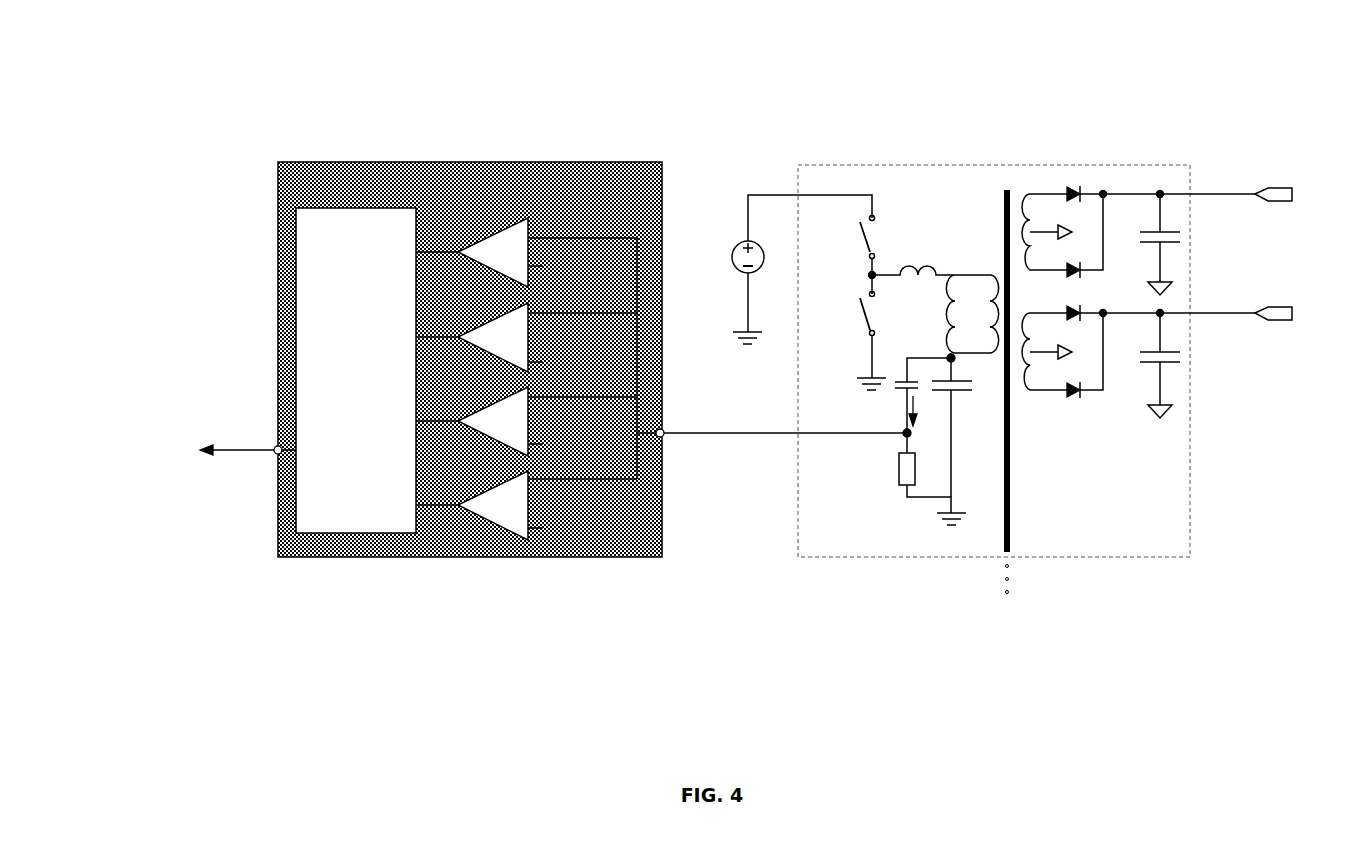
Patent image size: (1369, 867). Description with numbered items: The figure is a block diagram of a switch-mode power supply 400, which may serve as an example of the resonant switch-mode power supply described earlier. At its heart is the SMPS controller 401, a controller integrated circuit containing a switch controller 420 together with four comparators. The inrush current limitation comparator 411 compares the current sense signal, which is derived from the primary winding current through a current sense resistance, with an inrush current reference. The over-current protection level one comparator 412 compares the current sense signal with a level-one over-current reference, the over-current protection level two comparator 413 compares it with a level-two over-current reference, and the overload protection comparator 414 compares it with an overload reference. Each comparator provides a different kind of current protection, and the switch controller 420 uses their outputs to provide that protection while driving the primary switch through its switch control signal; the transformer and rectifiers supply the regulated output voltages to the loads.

The switch-mode power supply 400 is at (718, 26).
The SMPS controller 401 is at (650, 183).
The switch controller 420 is at (339, 404).
The inrush current limitation (ICL) comparator 411 is at (490, 405).
The over-current protection (OCP) level one comparator 412 is at (492, 235).
The OCP level 2 comparator 413 is at (490, 321).
The overload protection comparator 414 is at (490, 489).